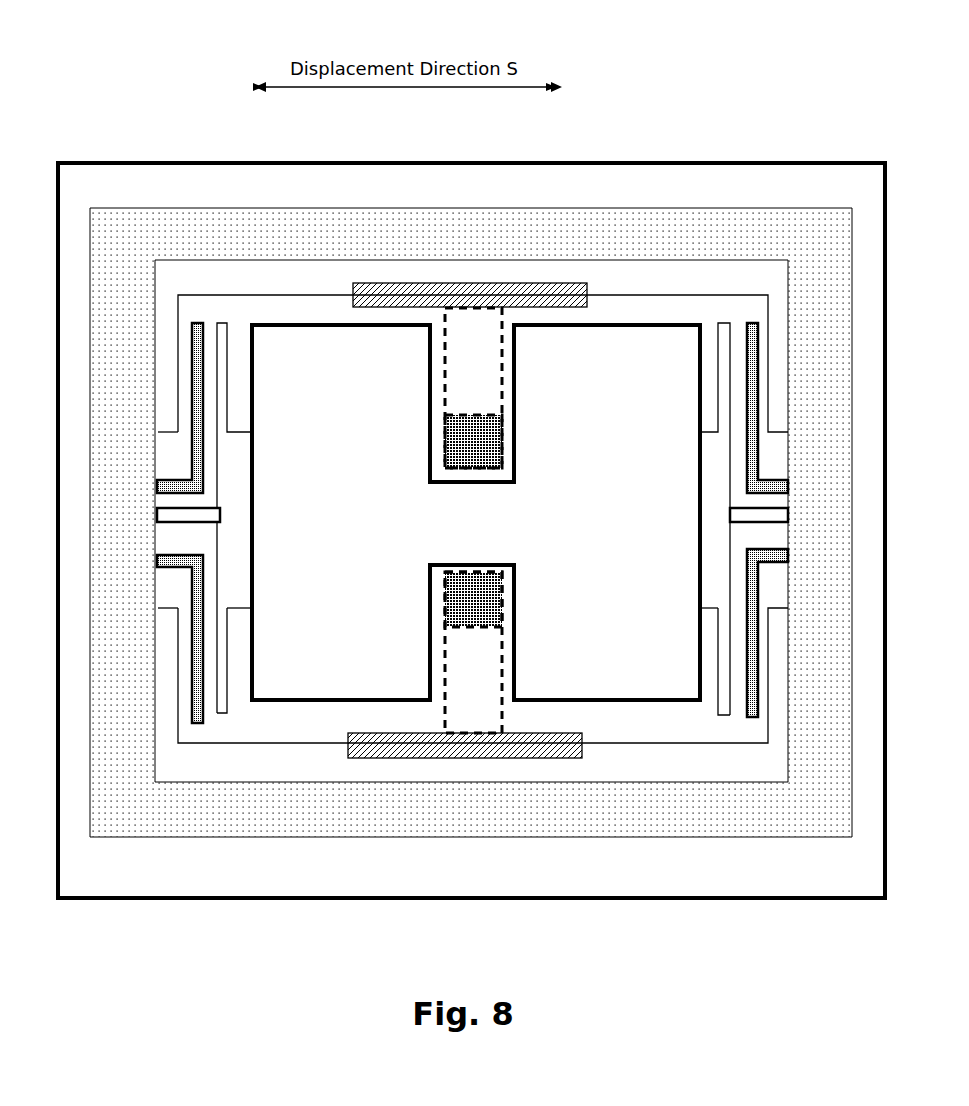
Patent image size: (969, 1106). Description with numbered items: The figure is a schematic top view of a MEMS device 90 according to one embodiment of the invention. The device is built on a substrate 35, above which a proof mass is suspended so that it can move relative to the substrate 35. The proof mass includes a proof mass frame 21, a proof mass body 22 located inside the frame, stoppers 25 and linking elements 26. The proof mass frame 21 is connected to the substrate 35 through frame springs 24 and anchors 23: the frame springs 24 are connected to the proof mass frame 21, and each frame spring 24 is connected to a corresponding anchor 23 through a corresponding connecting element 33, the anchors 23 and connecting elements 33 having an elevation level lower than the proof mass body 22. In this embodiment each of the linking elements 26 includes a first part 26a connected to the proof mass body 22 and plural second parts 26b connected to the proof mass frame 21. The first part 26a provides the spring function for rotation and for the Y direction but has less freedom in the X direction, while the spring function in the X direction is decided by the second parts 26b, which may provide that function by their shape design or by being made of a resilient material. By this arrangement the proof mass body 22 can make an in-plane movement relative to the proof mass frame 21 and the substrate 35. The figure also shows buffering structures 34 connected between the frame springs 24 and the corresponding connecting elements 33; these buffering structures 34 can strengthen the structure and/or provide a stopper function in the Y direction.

The MEMS device 90 is at (807, 92).
The substrate 35 is at (314, 900).
The proof mass frame 21 is at (518, 225).
The proof mass body 22 is at (589, 528).
The anchor 23 is at (464, 456).
The frame spring 24 is at (318, 295).
The stopper 25 is at (197, 323).
The linking element 26 is at (313, 415).
The first part 26a is at (220, 517).
The second part 26b is at (230, 430).
The connecting element 33 is at (464, 393).
The buffering structure 34 is at (590, 290).